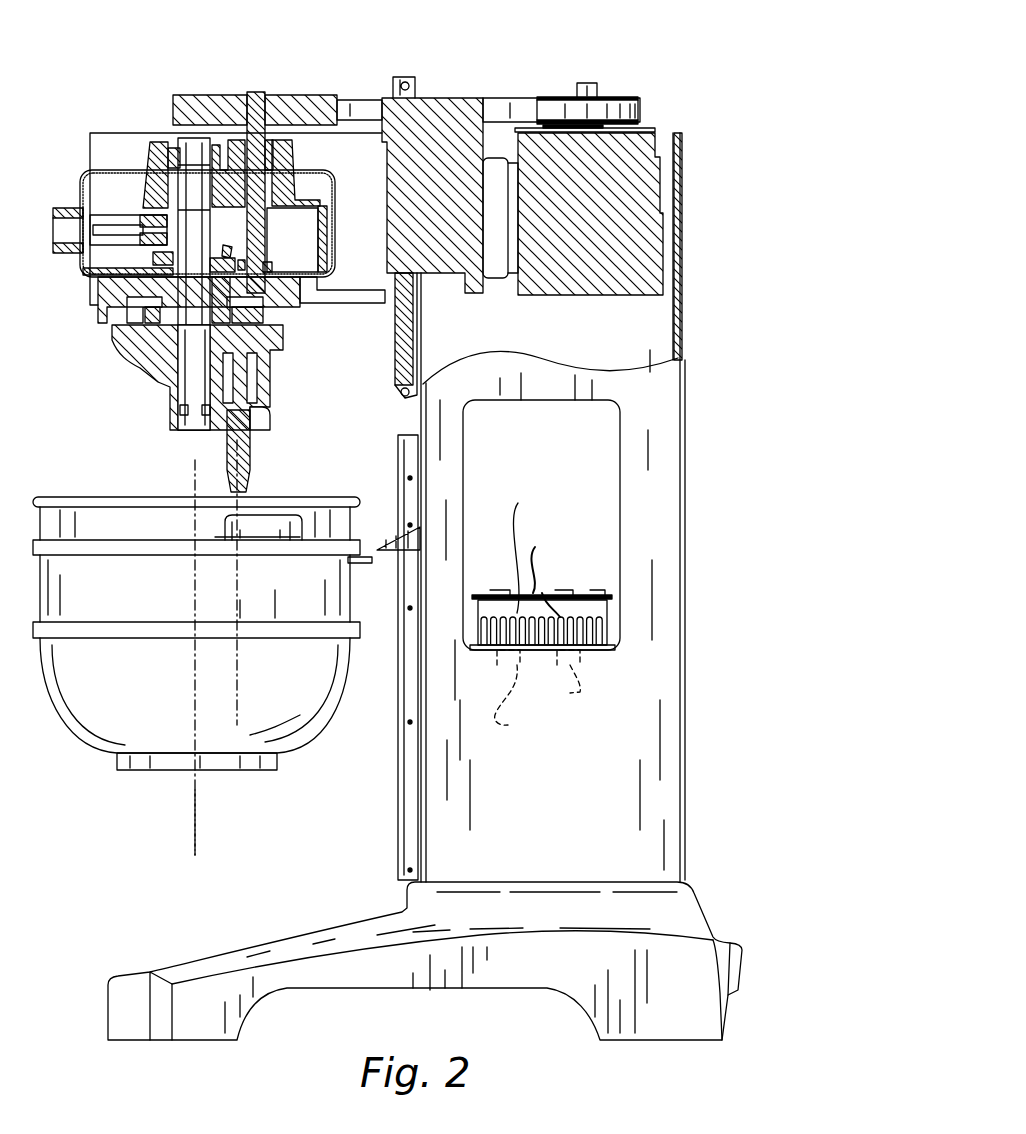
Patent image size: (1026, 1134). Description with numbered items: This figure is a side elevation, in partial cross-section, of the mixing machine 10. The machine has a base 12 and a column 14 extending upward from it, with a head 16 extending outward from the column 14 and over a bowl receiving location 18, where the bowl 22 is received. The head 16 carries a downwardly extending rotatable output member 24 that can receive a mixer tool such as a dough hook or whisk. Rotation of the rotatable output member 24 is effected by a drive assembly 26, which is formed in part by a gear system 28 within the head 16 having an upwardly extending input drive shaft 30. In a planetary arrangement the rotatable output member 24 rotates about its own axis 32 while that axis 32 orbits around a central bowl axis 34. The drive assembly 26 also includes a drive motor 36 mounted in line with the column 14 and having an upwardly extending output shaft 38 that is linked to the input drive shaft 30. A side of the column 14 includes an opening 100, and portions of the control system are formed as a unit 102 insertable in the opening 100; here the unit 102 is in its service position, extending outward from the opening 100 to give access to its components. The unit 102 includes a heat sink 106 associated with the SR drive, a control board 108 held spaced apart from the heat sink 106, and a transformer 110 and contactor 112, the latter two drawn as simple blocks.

The mixing machine 10 is at (640, 55).
The base 12 is at (335, 925).
The column 14 is at (620, 754).
The head 16 is at (90, 150).
The bowl receiving location 18 is at (80, 485).
The bowl 22 is at (98, 710).
The rotatable output member 24 is at (250, 465).
The drive assembly 26 is at (450, 68).
The gear system 28 is at (330, 160).
The input drive shaft 30 is at (258, 95).
The axis 32 is at (235, 678).
The central bowl axis 34 is at (193, 806).
The drive motor 36 is at (593, 232).
The output shaft 38 is at (577, 90).
The opening 100 is at (618, 465).
The unit 102 is at (590, 570).
The heat sink 106 is at (539, 553).
The control board 108 is at (557, 577).
The transformer 110 is at (523, 694).
The contactor 112 is at (557, 677).